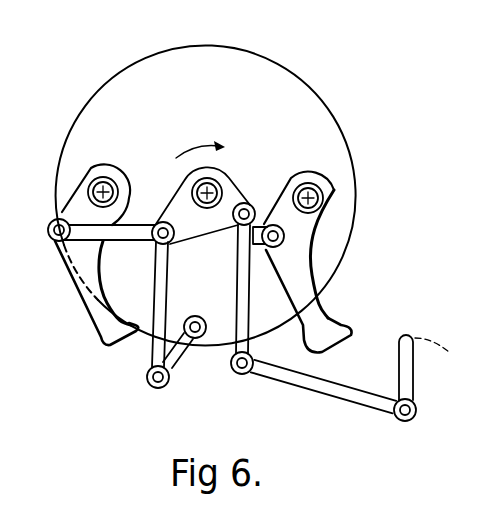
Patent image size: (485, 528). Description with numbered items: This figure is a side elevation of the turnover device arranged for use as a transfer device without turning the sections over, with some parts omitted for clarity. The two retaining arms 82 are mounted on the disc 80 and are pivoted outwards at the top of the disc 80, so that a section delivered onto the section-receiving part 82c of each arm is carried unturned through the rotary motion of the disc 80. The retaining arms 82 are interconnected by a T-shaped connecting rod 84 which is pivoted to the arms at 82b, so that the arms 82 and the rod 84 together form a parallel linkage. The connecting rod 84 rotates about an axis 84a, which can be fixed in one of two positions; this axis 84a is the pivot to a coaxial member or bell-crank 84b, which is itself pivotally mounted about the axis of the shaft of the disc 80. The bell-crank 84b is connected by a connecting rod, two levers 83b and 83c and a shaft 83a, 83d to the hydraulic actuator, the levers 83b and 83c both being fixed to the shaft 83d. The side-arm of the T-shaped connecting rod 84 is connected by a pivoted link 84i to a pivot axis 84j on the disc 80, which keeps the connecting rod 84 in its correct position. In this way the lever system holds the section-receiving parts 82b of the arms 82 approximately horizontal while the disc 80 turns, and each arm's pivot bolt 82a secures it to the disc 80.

The disc 80 is at (279, 77).
The retaining arms 82 is at (75, 297).
The arm pivot bolt 82a is at (97, 186).
The pivot of connecting rod to arms 82b is at (50, 243).
The section-receiving part 82c is at (98, 284).
The shaft 83a is at (274, 370).
The lever 83b is at (341, 393).
The lever 83c is at (399, 367).
The shaft 83d is at (405, 421).
The T-shaped connecting rod 84 is at (128, 230).
The axis 84a is at (164, 221).
The bell-crank 84b is at (216, 172).
The pivoted link 84i is at (178, 382).
The pivot axis 84j is at (201, 340).